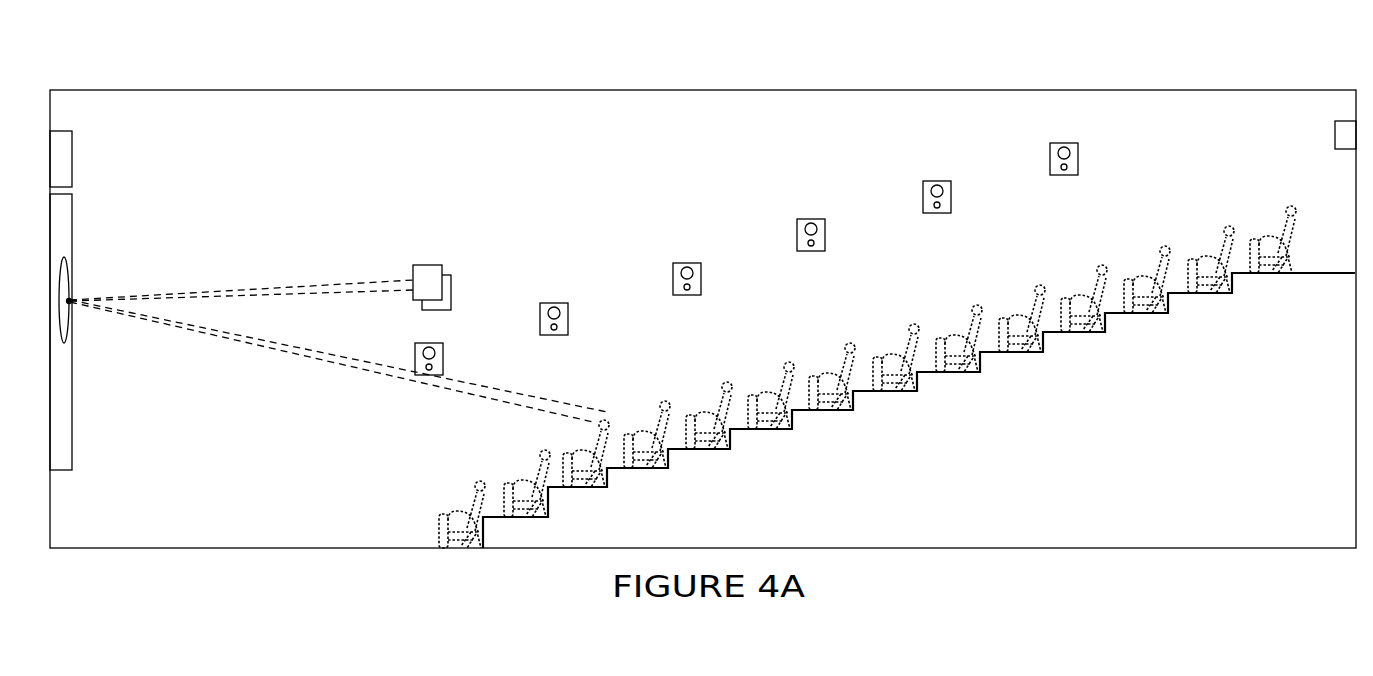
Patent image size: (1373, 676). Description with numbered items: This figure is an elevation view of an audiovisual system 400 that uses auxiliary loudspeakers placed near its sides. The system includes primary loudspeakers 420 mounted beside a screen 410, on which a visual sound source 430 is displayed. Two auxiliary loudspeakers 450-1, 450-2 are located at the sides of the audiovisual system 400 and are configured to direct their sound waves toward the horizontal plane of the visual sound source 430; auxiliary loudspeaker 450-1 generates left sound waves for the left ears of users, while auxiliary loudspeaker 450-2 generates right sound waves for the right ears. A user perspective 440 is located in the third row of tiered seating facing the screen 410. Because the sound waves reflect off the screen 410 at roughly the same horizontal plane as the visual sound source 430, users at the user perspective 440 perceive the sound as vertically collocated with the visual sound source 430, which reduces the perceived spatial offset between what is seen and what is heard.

The audiovisual system 400 is at (1097, 78).
The screen 410 is at (74, 457).
The primary loudspeakers 420 is at (75, 144).
The visual sound source 430 is at (70, 305).
The user perspective 440 is at (616, 480).
The auxiliary loudspeaker 450-1 is at (522, 229).
The auxiliary loudspeaker 450-2 is at (548, 354).